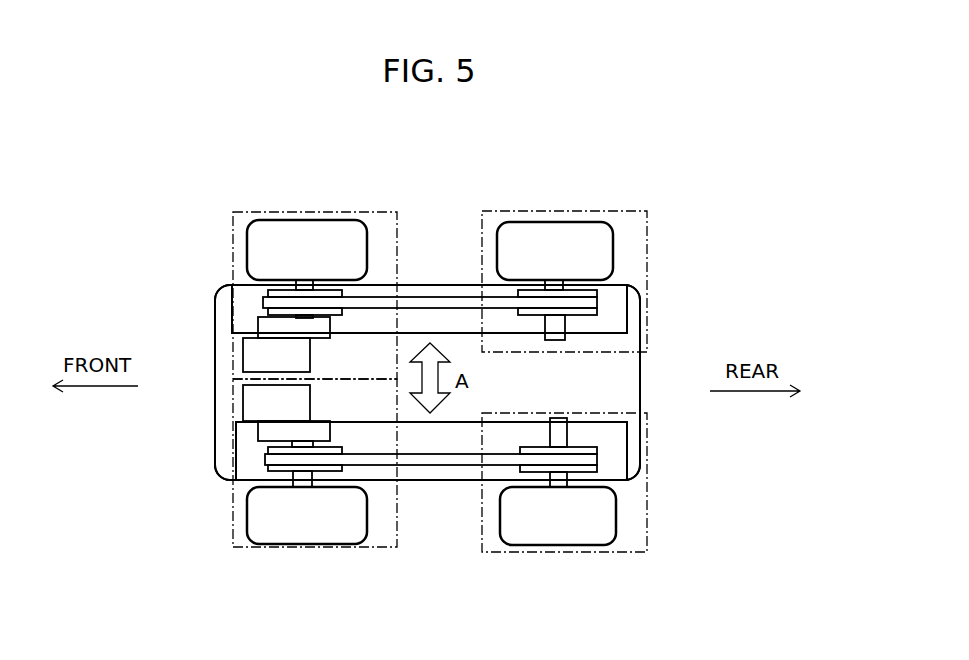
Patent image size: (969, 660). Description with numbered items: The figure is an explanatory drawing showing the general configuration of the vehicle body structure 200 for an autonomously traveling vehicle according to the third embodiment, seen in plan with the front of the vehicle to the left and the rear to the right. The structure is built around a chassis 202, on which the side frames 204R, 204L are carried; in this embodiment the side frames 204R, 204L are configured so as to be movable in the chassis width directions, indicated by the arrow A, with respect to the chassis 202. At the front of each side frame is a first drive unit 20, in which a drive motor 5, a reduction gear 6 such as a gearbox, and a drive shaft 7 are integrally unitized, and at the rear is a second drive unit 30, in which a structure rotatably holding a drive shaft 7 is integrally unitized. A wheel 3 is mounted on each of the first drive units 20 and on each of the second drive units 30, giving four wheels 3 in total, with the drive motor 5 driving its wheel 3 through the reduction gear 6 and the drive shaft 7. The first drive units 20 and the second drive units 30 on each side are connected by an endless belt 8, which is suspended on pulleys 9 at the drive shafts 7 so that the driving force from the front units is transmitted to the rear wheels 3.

The wheel 3 is at (298, 225).
The drive motor 5 is at (250, 355).
The reduction gear 6 is at (262, 325).
The drive shaft 7 is at (272, 290).
The endless belt 8 is at (437, 300).
The pulley 9 is at (335, 314).
The first drive unit 20 is at (345, 203).
The second drive unit 30 is at (588, 203).
The vehicle body structure 200 is at (688, 260).
The chassis 202 is at (640, 428).
The side frame 204R is at (620, 303).
The side frame 204L is at (620, 463).